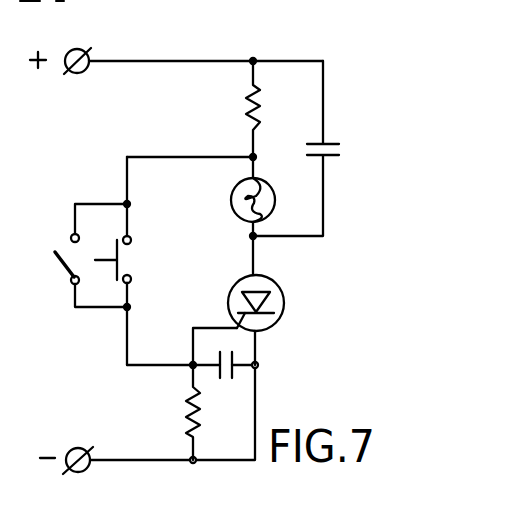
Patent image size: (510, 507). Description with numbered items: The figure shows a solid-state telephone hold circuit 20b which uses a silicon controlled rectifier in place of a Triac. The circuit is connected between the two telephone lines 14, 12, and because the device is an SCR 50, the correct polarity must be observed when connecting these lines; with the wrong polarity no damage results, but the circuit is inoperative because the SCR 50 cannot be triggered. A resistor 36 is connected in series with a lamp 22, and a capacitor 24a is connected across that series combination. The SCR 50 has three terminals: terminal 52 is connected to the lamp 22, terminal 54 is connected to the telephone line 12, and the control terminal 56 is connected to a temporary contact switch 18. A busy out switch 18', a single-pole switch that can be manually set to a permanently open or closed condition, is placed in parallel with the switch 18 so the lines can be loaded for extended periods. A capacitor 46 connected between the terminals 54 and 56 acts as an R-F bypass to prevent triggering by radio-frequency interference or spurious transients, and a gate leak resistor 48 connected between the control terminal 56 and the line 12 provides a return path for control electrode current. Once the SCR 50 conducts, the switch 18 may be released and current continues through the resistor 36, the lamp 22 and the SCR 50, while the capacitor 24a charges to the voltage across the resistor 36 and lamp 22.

The telephone line 14 is at (84, 53).
The telephone line 12 is at (79, 448).
The circuit 20b is at (348, 54).
The resistor 36 is at (246, 109).
The capacitor 24a is at (340, 150).
The lamp 22 is at (231, 200).
The switch 18 is at (78, 255).
The busy out switch 18' is at (68, 257).
The terminal 52 is at (257, 254).
The SCR 50 is at (284, 303).
The terminal 56 is at (203, 326).
The terminal 54 is at (258, 345).
The capacitor 46 is at (233, 382).
The gate leak resistor 48 is at (188, 404).